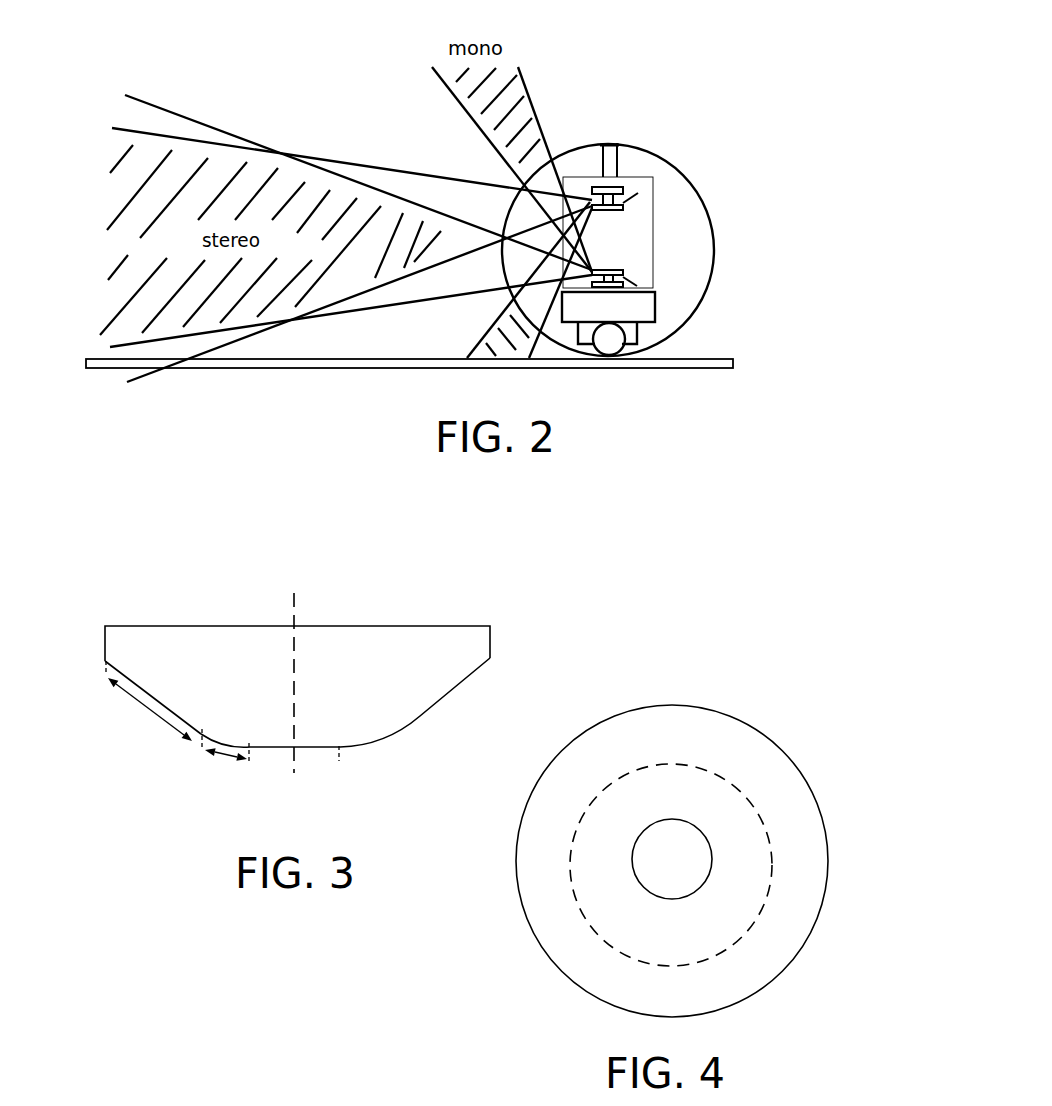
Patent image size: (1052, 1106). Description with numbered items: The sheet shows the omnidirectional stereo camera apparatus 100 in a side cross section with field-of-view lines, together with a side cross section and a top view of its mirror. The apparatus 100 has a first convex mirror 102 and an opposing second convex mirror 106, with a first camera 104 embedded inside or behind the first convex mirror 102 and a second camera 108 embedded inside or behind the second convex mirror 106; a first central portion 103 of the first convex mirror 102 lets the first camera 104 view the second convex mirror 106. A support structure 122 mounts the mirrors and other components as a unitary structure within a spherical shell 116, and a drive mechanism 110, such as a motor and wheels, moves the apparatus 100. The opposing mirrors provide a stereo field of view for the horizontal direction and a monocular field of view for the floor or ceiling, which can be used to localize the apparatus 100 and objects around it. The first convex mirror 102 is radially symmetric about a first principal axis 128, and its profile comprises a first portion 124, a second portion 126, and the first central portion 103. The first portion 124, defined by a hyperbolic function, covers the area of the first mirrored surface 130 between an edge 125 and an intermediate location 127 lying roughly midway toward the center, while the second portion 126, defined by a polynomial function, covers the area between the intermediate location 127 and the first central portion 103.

In FIG. 2, the apparatus 100 is at (616, 60).
In FIG. 2, the first convex mirror 102 is at (648, 232).
In FIG. 3, the first convex mirror 102 is at (490, 633).
In FIG. 4, the first convex mirror 102 is at (762, 758).
In FIG. 3, the first central portion 103 is at (320, 748).
In FIG. 4, the first central portion 103 is at (687, 867).
In FIG. 2, the first camera 104 is at (618, 187).
In FIG. 2, the second convex mirror 106 is at (625, 270).
In FIG. 2, the second camera 108 is at (655, 308).
In FIG. 2, the drive mechanism 110 is at (617, 355).
In FIG. 2, the spherical shell 116 is at (670, 163).
In FIG. 2, the support structure 122 is at (623, 210).
In FIG. 3, the first portion 124 is at (147, 712).
In FIG. 4, the first portion 124 is at (658, 752).
In FIG. 3, the edge 125 is at (105, 658).
In FIG. 4, the edge 125 is at (708, 707).
In FIG. 3, the second portion 126 is at (220, 757).
In FIG. 4, the second portion 126 is at (692, 804).
In FIG. 3, the intermediate location 127 is at (200, 729).
In FIG. 4, the intermediate location 127 is at (773, 853).
In FIG. 3, the first principal axis 128 is at (294, 617).
In FIG. 3, the first mirrored surface 130 is at (430, 724).
In FIG. 4, the first mirrored surface 130 is at (550, 922).